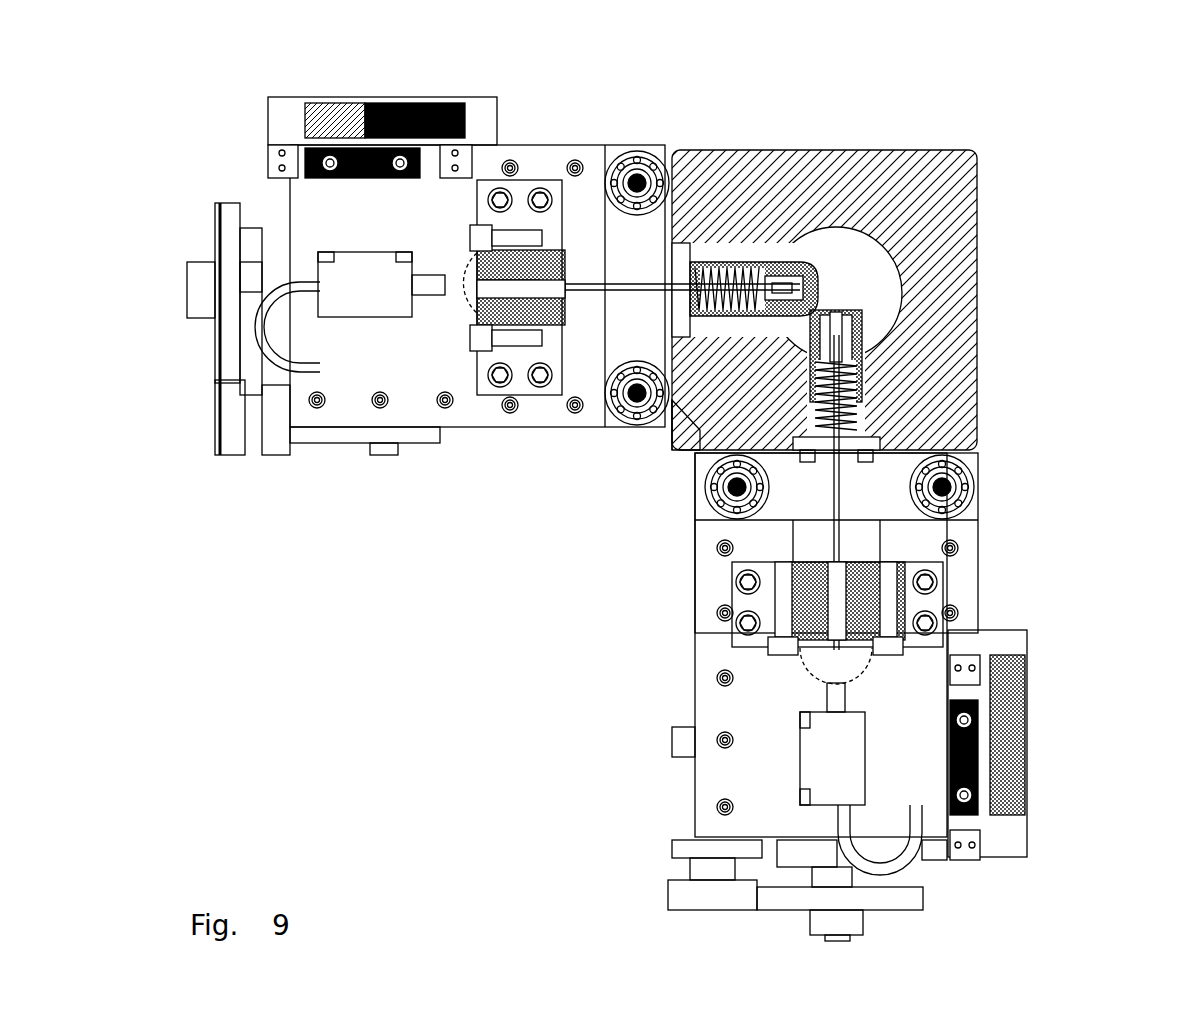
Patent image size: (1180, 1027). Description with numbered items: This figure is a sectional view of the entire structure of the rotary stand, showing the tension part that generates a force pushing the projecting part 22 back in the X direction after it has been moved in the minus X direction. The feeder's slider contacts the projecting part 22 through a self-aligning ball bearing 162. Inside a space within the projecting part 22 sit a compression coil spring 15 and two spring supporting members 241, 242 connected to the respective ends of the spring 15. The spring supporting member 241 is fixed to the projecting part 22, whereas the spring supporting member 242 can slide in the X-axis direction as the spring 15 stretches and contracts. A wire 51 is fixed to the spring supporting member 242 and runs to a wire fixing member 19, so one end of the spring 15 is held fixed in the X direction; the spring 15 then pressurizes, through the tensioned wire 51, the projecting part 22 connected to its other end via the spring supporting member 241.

The spring 15 is at (722, 262).
The wire fixing member 19 is at (475, 255).
The projecting part 22 is at (962, 165).
The wire 51 is at (577, 284).
The self-aligning ball bearing 162 is at (628, 362).
The spring supporting member 241 is at (690, 425).
The spring supporting member 242 is at (772, 262).